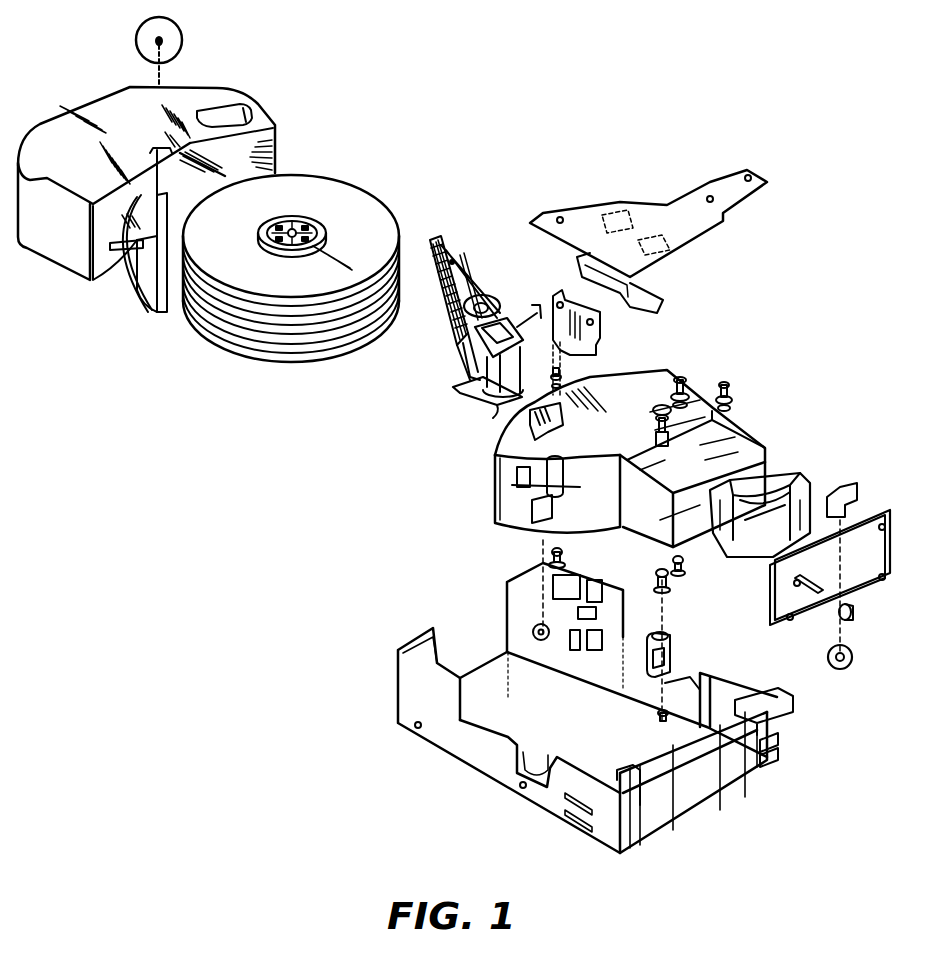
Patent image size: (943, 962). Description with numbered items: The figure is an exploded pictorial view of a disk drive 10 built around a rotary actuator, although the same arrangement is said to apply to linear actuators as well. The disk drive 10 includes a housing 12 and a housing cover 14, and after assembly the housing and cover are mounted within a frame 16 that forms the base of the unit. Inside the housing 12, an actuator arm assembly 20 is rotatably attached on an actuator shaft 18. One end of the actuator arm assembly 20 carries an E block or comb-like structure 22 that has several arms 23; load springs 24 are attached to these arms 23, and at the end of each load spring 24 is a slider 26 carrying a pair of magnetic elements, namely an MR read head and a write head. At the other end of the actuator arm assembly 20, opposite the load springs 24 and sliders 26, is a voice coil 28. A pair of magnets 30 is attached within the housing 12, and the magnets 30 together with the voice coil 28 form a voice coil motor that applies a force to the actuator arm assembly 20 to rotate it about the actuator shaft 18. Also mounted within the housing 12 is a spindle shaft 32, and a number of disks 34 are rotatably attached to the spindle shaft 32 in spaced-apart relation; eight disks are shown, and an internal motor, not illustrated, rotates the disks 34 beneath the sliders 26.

The disk drive 10 is at (408, 168).
The housing 12 is at (655, 380).
The housing cover 14 is at (70, 256).
The frame 16 is at (462, 757).
The actuator shaft 18 is at (488, 294).
The actuator arm assembly 20 is at (443, 350).
The E block or comb-like structure 22 is at (432, 312).
The arms 23 is at (468, 274).
The load springs 24 is at (450, 248).
The slider 26 is at (432, 238).
The voice coil 28 is at (496, 413).
The magnets 30 is at (787, 478).
The spindle shaft 32 is at (291, 232).
The disks 34 is at (252, 335).